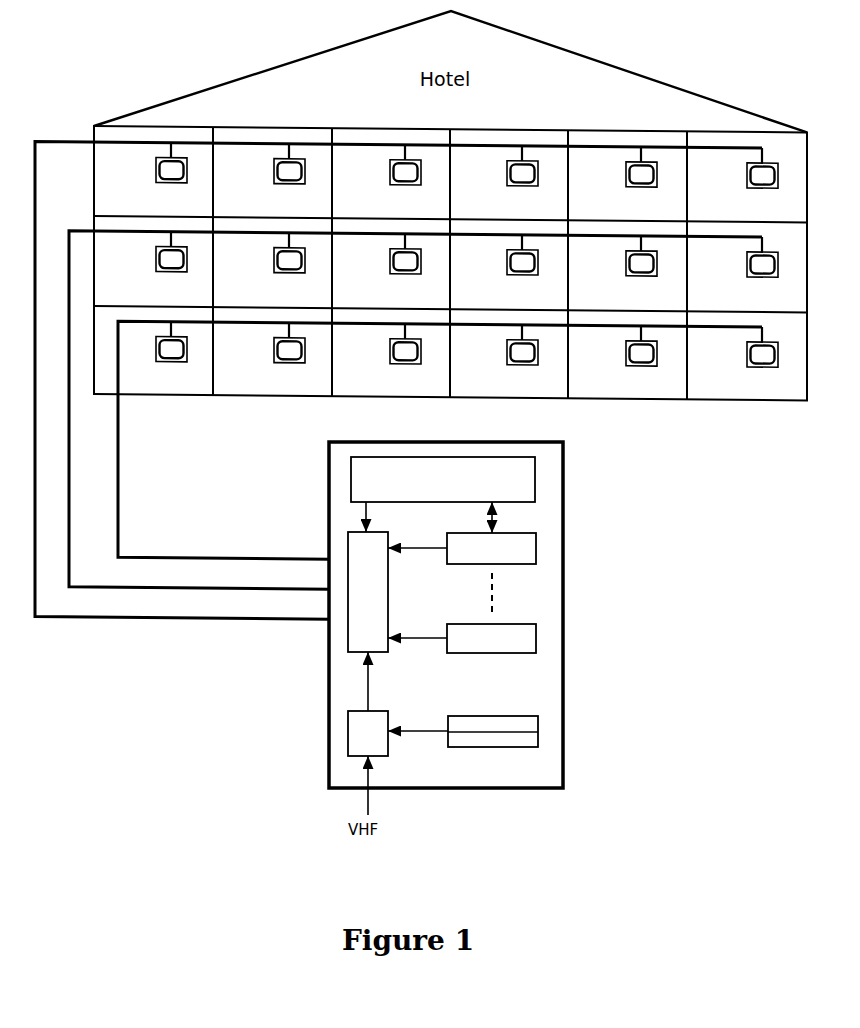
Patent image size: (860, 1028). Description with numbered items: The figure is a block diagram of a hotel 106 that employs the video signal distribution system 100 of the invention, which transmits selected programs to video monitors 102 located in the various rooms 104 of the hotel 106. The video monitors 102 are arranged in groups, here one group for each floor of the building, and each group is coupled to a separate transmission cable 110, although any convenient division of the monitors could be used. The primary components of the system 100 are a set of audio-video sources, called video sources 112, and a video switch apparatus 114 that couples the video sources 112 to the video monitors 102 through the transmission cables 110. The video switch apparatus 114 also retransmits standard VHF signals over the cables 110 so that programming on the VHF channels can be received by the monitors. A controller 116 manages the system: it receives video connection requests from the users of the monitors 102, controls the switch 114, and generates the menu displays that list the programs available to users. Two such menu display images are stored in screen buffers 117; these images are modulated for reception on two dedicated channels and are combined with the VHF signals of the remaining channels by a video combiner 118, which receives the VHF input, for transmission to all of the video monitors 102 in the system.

The video signal distribution system 100 is at (655, 540).
The video monitors 102 is at (762, 362).
The rooms 104 is at (732, 392).
The hotel 106 is at (623, 73).
The transmission cable 110 is at (35, 493).
The video sources 112 is at (536, 547).
The video switch apparatus 114 is at (348, 546).
The controller 116 is at (351, 479).
The screen buffers 117 is at (538, 741).
The video combiner 118 is at (348, 742).